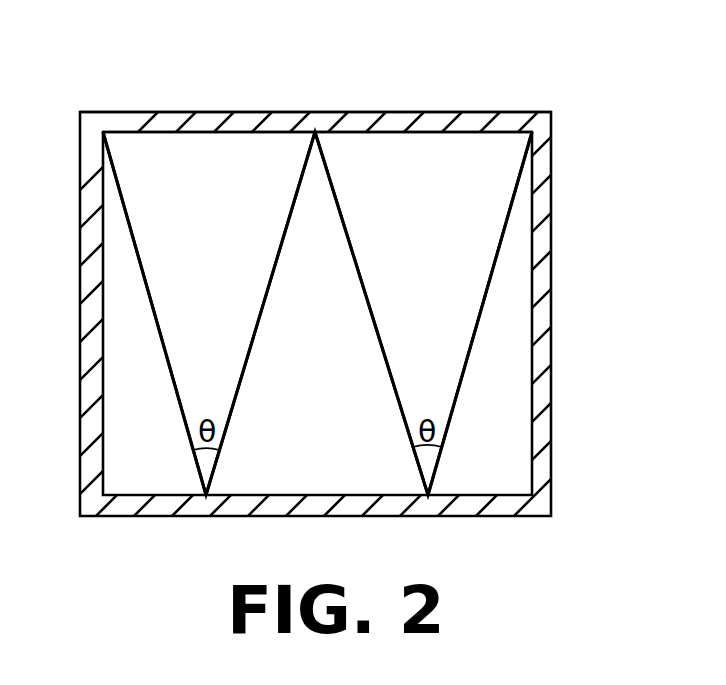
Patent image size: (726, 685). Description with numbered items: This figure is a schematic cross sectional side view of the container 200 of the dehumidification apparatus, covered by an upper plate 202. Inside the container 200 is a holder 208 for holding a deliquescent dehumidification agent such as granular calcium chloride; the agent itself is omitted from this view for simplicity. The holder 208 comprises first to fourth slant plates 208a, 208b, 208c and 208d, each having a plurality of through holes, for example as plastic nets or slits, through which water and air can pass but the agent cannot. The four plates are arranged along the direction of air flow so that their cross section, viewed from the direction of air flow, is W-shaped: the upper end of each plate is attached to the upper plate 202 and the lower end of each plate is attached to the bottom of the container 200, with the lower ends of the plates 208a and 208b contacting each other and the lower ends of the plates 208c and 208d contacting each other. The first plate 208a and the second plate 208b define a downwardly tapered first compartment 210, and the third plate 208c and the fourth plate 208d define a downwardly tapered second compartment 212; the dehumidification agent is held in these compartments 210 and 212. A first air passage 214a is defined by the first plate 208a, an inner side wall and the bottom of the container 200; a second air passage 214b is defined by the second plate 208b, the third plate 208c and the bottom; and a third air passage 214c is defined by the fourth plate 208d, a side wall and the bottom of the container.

The container 200 is at (363, 324).
The upper plate 202 is at (386, 121).
The holder 208 is at (319, 313).
The first slant plate 208a is at (468, 355).
The second slant plate 208b is at (389, 367).
The third slant plate 208c is at (284, 226).
The fourth slant plate 208d is at (170, 361).
The first compartment 210 is at (460, 270).
The second compartment 212 is at (240, 267).
The first air passage 214a is at (525, 460).
The second air passage 214b is at (365, 402).
The third air passage 214c is at (177, 458).